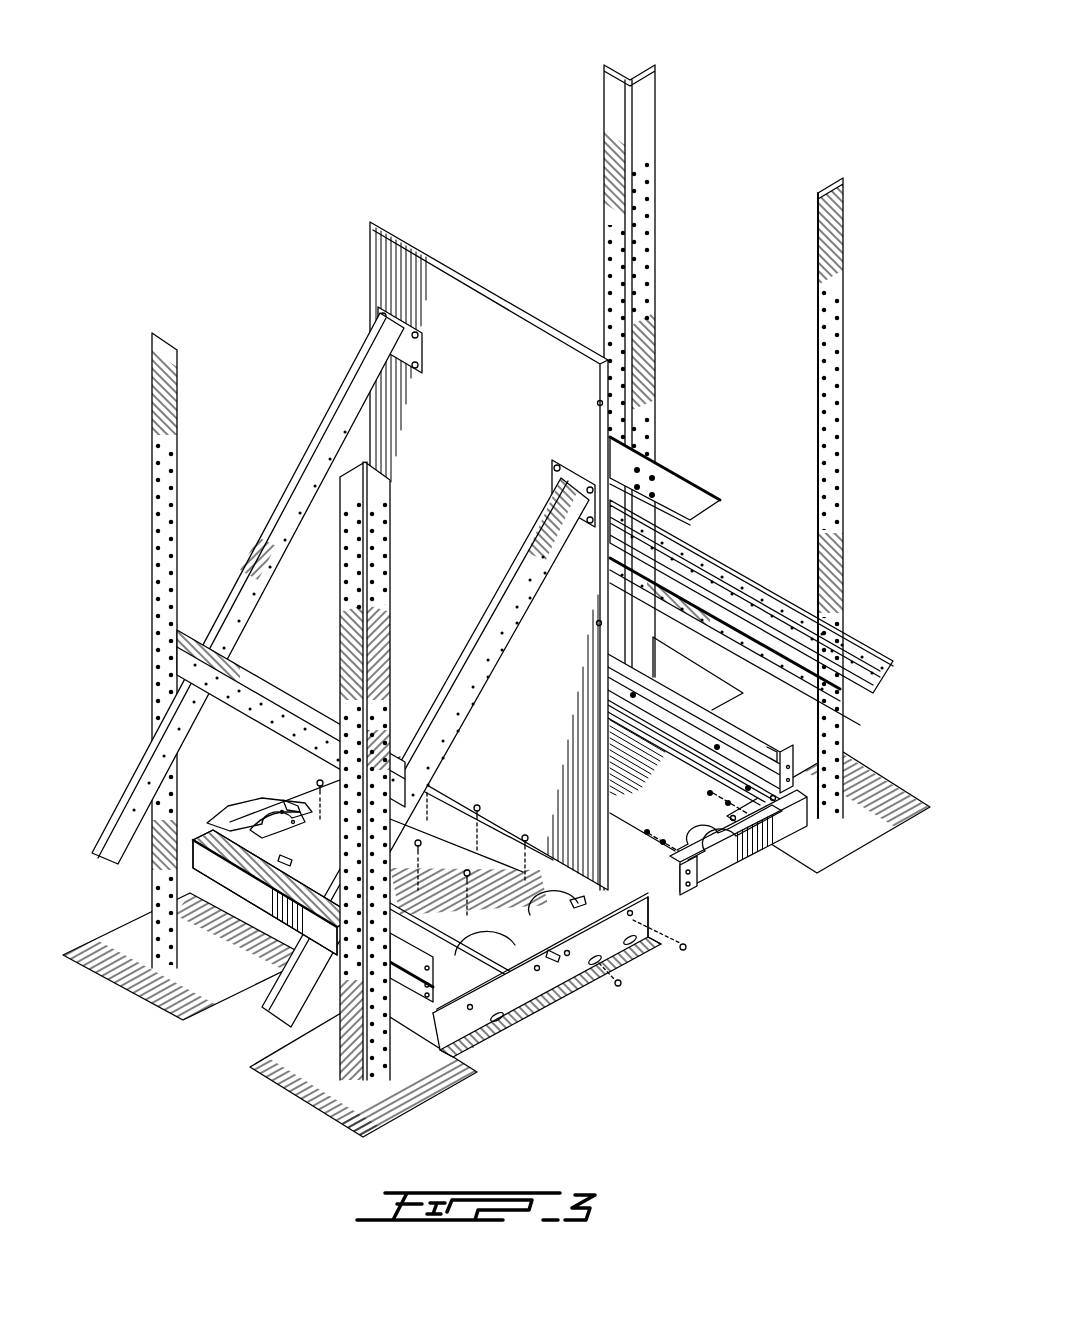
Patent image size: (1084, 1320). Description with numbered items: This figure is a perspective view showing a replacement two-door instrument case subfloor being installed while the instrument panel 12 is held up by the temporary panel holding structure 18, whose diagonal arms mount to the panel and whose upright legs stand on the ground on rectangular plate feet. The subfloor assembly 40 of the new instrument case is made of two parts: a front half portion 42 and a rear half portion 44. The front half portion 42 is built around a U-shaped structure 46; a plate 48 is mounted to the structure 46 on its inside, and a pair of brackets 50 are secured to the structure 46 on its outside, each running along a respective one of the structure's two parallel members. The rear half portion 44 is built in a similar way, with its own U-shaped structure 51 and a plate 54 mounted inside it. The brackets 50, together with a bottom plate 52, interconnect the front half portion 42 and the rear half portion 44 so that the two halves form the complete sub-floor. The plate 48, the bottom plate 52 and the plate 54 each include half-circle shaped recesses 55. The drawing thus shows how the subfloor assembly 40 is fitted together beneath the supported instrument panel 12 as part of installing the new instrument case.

The panel holding structure 18 is at (743, 132).
The instrument panel 12 is at (468, 323).
The subfloor assembly 40 is at (805, 905).
The front half portion 42 is at (575, 1005).
The rear half portion 44 is at (722, 872).
The U-shaped structure 46 is at (425, 1020).
The plate 48 is at (420, 932).
The brackets 50 is at (230, 826).
The U-shaped structure 51 is at (795, 818).
The bottom plate 52 is at (328, 775).
The plate 54 is at (693, 807).
The half-circle shaped recesses 55 is at (290, 800).